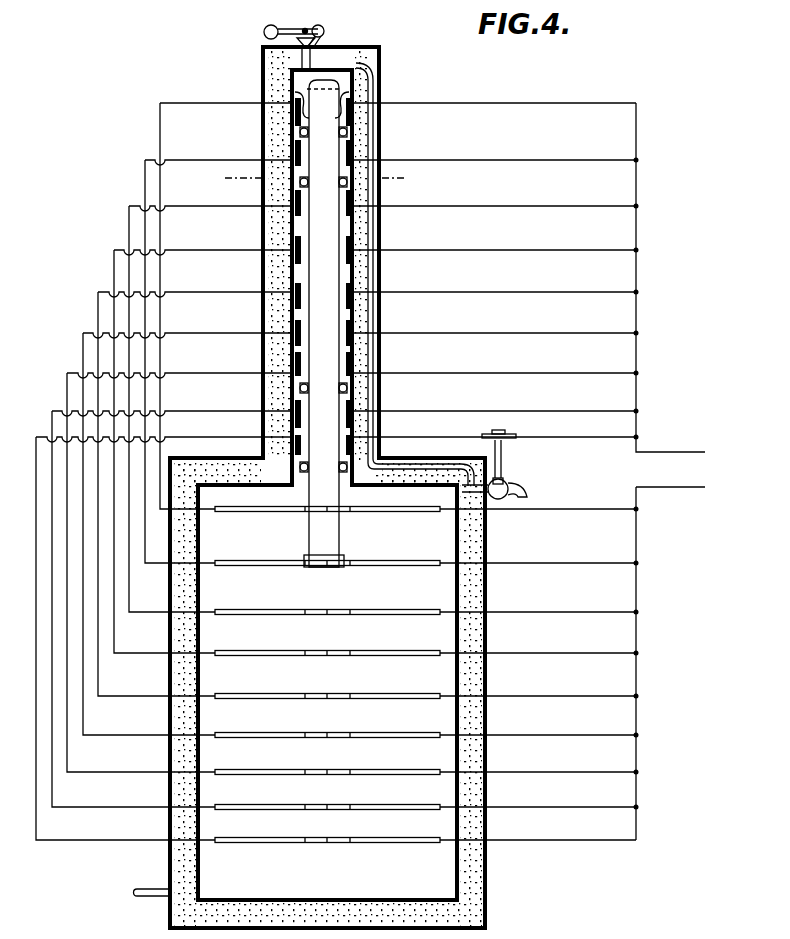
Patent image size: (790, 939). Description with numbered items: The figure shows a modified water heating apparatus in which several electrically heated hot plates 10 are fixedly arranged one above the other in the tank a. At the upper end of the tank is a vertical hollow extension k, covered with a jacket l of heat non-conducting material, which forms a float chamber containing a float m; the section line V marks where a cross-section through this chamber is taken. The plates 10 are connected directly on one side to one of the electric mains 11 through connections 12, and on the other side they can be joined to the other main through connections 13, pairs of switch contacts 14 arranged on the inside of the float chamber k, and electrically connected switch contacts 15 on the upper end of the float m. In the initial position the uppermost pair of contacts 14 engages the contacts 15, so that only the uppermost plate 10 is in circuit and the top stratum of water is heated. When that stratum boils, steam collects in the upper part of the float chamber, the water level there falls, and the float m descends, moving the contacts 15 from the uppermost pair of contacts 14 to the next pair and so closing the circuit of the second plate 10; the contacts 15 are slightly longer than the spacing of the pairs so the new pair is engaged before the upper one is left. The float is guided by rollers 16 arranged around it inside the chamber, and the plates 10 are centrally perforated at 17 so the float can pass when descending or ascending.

The electrically heated hot plate 10 is at (258, 512).
The electric main 11 is at (679, 471).
The connection 12 is at (564, 511).
The connection 13 is at (546, 222).
The pair of switch contacts 14 is at (293, 152).
The switch contact 15 is at (296, 94).
The roller 16 is at (300, 186).
The central perforation 17 is at (329, 616).
The tank a is at (228, 536).
The vertical hollow extension k is at (358, 228).
The jacket l is at (380, 270).
The float m is at (324, 323).
The section line V is at (315, 179).